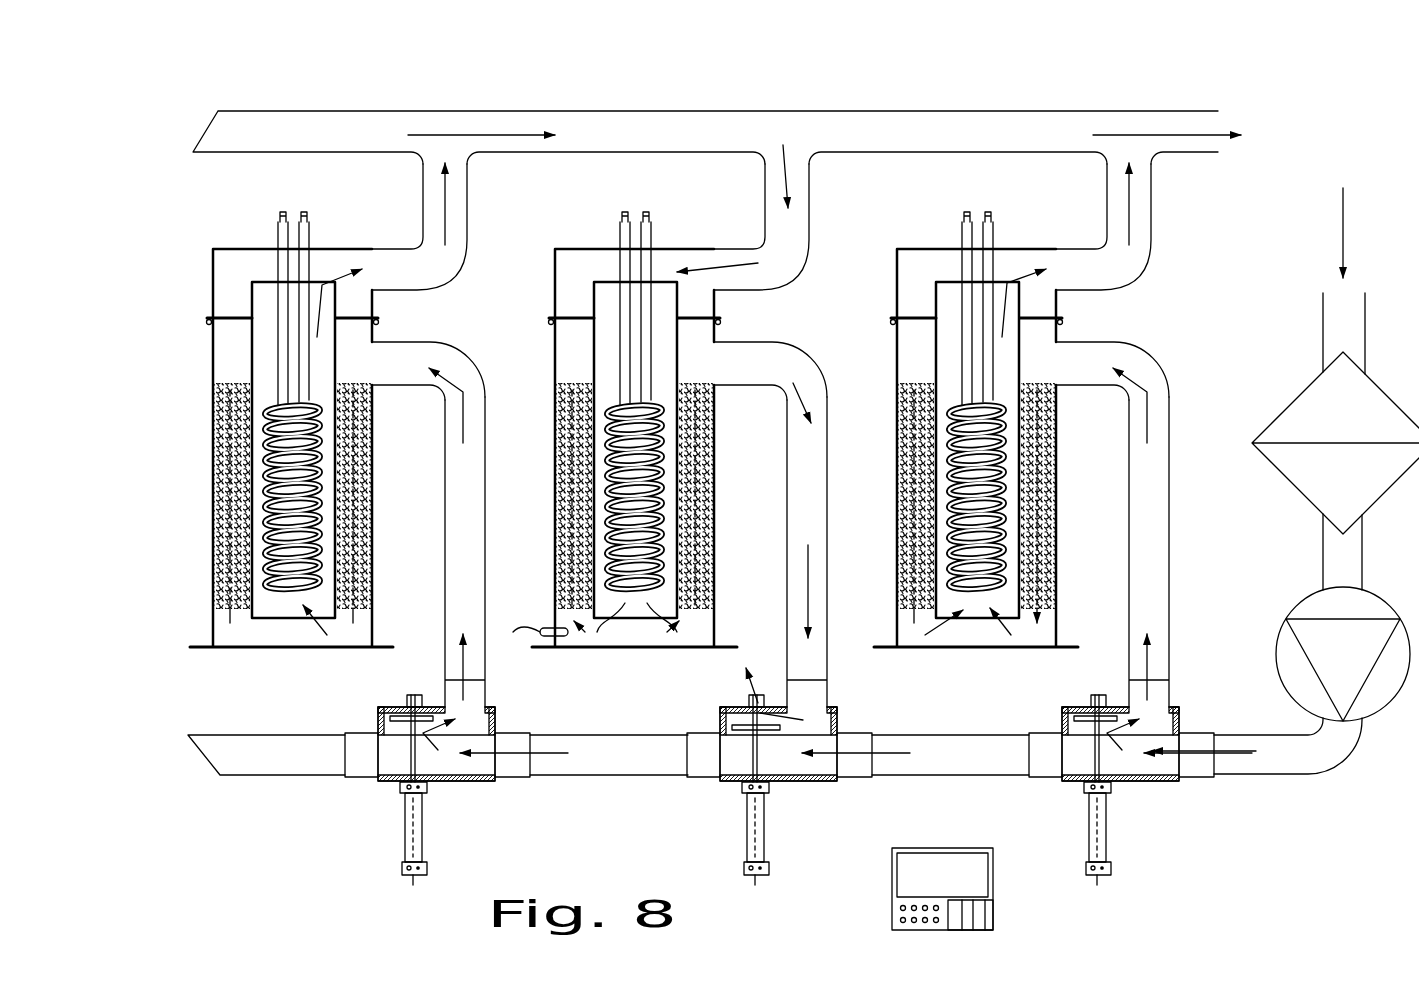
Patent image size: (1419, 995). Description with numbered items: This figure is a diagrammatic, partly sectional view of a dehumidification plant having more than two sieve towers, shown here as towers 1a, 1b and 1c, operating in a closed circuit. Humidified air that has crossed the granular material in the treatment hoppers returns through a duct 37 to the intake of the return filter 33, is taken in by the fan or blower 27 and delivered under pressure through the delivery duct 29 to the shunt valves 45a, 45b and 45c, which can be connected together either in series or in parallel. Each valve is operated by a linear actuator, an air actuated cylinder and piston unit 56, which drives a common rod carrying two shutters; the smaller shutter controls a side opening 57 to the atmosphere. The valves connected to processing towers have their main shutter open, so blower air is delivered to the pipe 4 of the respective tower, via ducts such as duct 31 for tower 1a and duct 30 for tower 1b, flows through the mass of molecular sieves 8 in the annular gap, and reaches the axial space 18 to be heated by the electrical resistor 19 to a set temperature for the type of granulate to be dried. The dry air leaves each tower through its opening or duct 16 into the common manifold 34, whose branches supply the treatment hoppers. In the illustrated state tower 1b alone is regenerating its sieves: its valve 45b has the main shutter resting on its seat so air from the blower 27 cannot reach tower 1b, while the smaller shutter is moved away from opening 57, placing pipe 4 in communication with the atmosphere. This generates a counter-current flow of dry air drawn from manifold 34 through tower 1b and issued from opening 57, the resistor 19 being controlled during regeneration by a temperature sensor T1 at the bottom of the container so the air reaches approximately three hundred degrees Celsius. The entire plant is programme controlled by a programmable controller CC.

The common duct 34 is at (740, 111).
The opening or duct for air intake/outlet 16 is at (383, 262).
The axial light or space 18 is at (262, 343).
The mass of molecular sieves 8 is at (212, 465).
The electrical resistor 19 is at (323, 460).
The opening or pipe 4 is at (403, 357).
The duct 31 is at (445, 488).
The duct 30 is at (788, 485).
The shunt valve 45c is at (364, 804).
The shunt valve 45b is at (721, 792).
The shunt valve 45a is at (1150, 797).
The opening 57 is at (752, 716).
The air actuated cylinder and piston unit 56 is at (425, 840).
The tower 1c is at (195, 572).
The tower 1b is at (581, 659).
The tower 1a is at (941, 658).
The temperature sensor T1 is at (547, 628).
The delivery duct 29 is at (1302, 766).
The blower 27 is at (1292, 607).
The return filter 33 is at (1288, 474).
The duct 37 is at (1367, 325).
The programmable controller CC is at (933, 848).